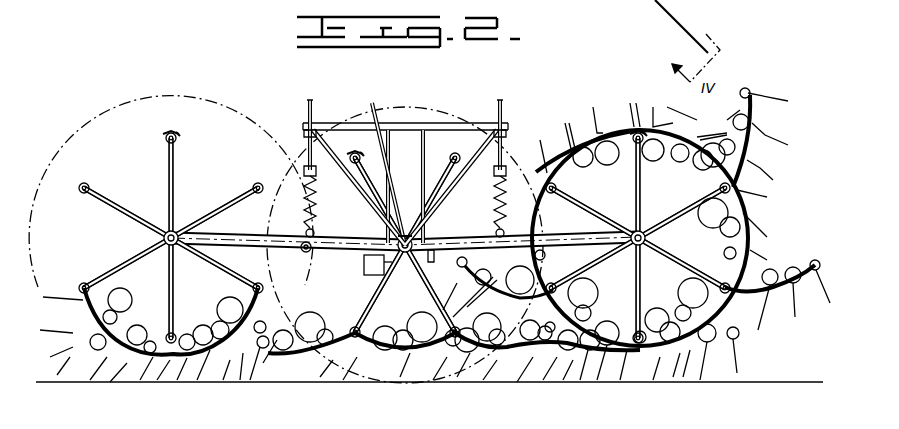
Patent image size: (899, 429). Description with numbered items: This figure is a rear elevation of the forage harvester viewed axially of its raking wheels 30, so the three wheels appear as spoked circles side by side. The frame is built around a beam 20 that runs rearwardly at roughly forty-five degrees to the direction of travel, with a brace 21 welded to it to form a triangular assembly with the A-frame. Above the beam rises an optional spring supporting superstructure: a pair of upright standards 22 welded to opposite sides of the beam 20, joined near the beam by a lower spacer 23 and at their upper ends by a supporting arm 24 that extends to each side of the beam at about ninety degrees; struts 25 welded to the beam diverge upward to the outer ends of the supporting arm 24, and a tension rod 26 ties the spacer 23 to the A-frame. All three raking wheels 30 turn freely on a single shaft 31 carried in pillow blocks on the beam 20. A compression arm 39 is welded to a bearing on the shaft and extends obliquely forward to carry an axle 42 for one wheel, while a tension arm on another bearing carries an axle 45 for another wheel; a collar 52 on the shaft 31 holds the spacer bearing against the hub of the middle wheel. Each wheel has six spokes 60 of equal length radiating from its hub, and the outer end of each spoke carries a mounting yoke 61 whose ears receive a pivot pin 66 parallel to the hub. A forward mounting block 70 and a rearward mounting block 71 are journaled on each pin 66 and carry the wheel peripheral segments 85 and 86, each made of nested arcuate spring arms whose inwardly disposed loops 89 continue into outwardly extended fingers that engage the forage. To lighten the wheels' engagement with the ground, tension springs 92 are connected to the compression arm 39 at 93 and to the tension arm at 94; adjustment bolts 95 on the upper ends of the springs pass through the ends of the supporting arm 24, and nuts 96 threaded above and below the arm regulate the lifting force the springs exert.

The beam 20 is at (404, 262).
The brace 21 is at (364, 264).
The upright standards 22 is at (422, 150).
The lower spacer 23 is at (406, 228).
The supporting arm 24 is at (396, 125).
The struts 25 is at (364, 198).
The tension rod 26 is at (377, 105).
The raking wheels 30 is at (178, 163).
The shaft 31 is at (434, 257).
The compression arm 39 is at (302, 250).
The axle 42 is at (164, 238).
The axle 45 is at (646, 240).
The collar 52 is at (514, 250).
The spokes 60 is at (172, 192).
The mounting yoke 61 is at (181, 137).
The pivot pins 66 is at (90, 187).
The forward mounting block 70 is at (168, 133).
The rearward mounting block 71 is at (178, 130).
The wheel peripheral segment 85 is at (88, 312).
The wheel peripheral segment 86 is at (132, 362).
The loop 89 is at (586, 300).
The tension springs 92 is at (304, 205).
The spring connection 93 is at (316, 233).
The spring connection 94 is at (496, 233).
The adjustment bolts 95 is at (313, 107).
The nuts 96 is at (304, 131).